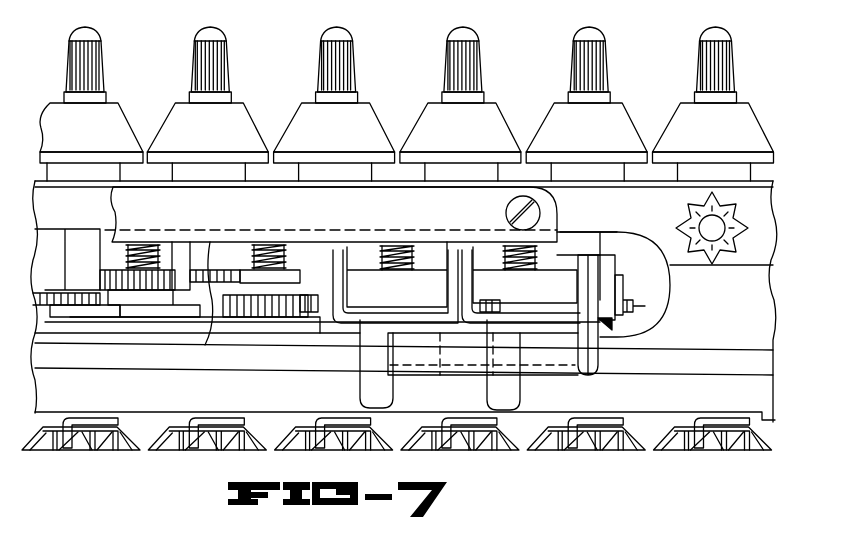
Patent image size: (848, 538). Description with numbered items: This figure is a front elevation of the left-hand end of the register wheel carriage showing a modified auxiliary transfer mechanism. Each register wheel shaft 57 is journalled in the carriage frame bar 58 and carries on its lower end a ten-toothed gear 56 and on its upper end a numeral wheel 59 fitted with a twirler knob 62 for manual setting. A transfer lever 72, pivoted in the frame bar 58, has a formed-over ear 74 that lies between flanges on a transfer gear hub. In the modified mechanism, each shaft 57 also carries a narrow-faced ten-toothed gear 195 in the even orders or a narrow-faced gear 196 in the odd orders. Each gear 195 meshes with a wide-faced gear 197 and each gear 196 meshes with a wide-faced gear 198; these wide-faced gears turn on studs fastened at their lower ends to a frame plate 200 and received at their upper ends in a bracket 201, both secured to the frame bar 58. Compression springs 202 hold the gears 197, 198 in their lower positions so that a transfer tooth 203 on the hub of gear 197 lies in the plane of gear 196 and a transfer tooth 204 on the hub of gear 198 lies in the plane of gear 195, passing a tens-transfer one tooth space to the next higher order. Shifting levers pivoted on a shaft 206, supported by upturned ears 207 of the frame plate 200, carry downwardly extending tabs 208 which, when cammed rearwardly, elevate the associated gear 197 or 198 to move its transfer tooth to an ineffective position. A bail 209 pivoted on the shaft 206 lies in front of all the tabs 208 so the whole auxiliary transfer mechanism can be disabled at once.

The ten-toothed gear 56 is at (398, 443).
The register wheel shaft 57 is at (80, 238).
The carriage frame bar 58 is at (783, 320).
The numeral wheel 59 is at (605, 124).
The twirler knob 62 is at (407, 104).
The transfer lever 72 is at (733, 425).
The formed-over ear 74 is at (397, 443).
The narrow-faced ten-toothed gear 195 is at (52, 305).
The narrow-faced ten-toothed gear 196 is at (207, 300).
The wide-faced gear 197 is at (326, 303).
The wide-faced gear 198 is at (175, 240).
The frame plate 200 is at (290, 330).
The bracket 201 is at (375, 222).
The compression spring 202 is at (275, 250).
The transfer tooth 203 is at (213, 255).
The transfer tooth 204 is at (110, 305).
The shaft 206 is at (430, 283).
The upturned ear 207 is at (606, 272).
The tab 208 is at (393, 390).
The bail 209 is at (462, 359).